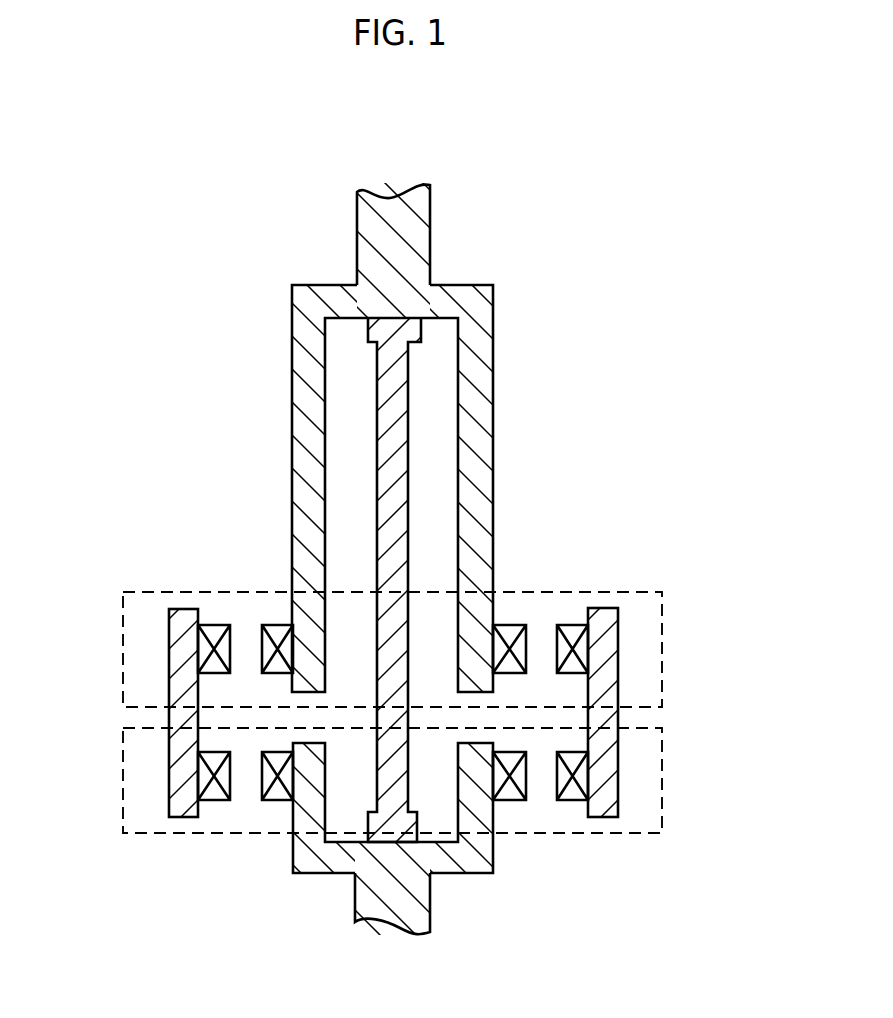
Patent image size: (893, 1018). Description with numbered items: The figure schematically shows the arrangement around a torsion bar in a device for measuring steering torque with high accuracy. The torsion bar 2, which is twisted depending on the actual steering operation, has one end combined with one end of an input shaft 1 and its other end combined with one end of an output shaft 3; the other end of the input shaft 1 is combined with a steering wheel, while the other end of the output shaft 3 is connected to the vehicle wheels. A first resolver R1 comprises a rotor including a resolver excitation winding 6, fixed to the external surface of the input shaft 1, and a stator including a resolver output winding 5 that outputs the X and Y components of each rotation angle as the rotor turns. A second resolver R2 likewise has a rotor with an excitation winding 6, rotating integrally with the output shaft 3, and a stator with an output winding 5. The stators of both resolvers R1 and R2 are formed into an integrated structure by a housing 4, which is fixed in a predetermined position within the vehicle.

The input shaft 1 is at (405, 240).
The torsion bar 2 is at (393, 400).
The output shaft 3 is at (473, 855).
The housing 4 is at (177, 666).
The resolver output winding 5 is at (218, 625).
The resolver excitation winding 6 is at (276, 625).
The first resolver R1 is at (783, 533).
The second resolver R2 is at (793, 700).